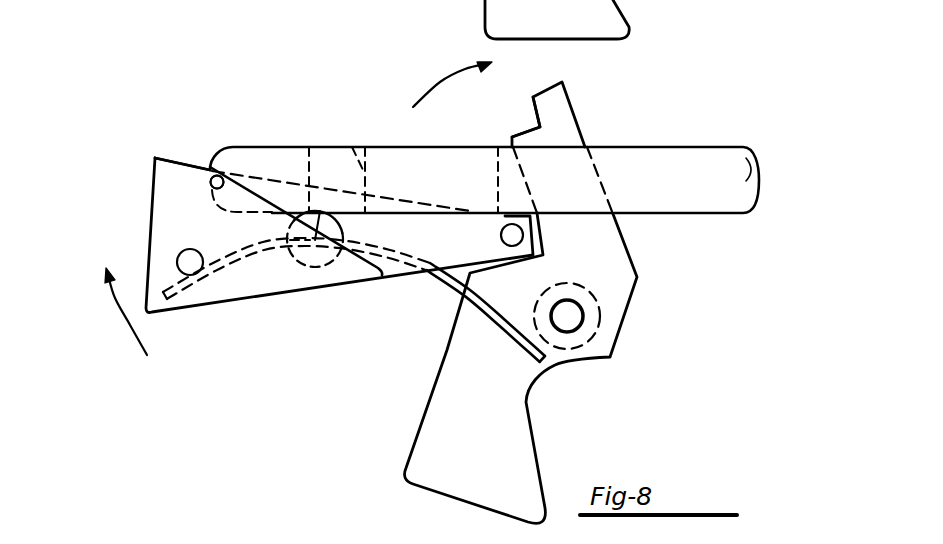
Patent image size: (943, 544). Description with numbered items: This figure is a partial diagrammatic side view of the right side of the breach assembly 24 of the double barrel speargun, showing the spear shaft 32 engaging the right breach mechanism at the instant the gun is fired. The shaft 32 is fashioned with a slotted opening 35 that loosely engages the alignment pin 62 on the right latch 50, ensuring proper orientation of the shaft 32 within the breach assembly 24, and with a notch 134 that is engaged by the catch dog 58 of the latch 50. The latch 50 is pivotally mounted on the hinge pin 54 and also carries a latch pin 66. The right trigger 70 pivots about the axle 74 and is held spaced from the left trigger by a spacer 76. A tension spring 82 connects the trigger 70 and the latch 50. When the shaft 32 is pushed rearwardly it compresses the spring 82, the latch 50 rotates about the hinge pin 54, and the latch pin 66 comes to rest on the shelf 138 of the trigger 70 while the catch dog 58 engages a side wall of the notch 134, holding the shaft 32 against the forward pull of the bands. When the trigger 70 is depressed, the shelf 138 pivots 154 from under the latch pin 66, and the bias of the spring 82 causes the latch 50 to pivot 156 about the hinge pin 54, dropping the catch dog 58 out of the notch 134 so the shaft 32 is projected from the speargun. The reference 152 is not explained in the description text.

The breach assembly 24 is at (328, 318).
The shaft 32 is at (665, 191).
The slotted opening 35 is at (186, 181).
The right latch 50 is at (177, 160).
The hinge pin 54 is at (194, 275).
The catch dog 58 is at (343, 238).
The alignment pin 62 is at (212, 188).
The latch pin 66 is at (498, 147).
The right trigger 70 is at (585, 133).
The axle 74 is at (571, 318).
The spacer 76 is at (593, 292).
The tension spring 82 is at (456, 282).
The notch 134 is at (352, 147).
The shelf 138 is at (529, 125).
The grip frame 152 is at (582, 438).
The pivoting of shelf 154 is at (440, 76).
The pivoting of latch 156 is at (113, 320).